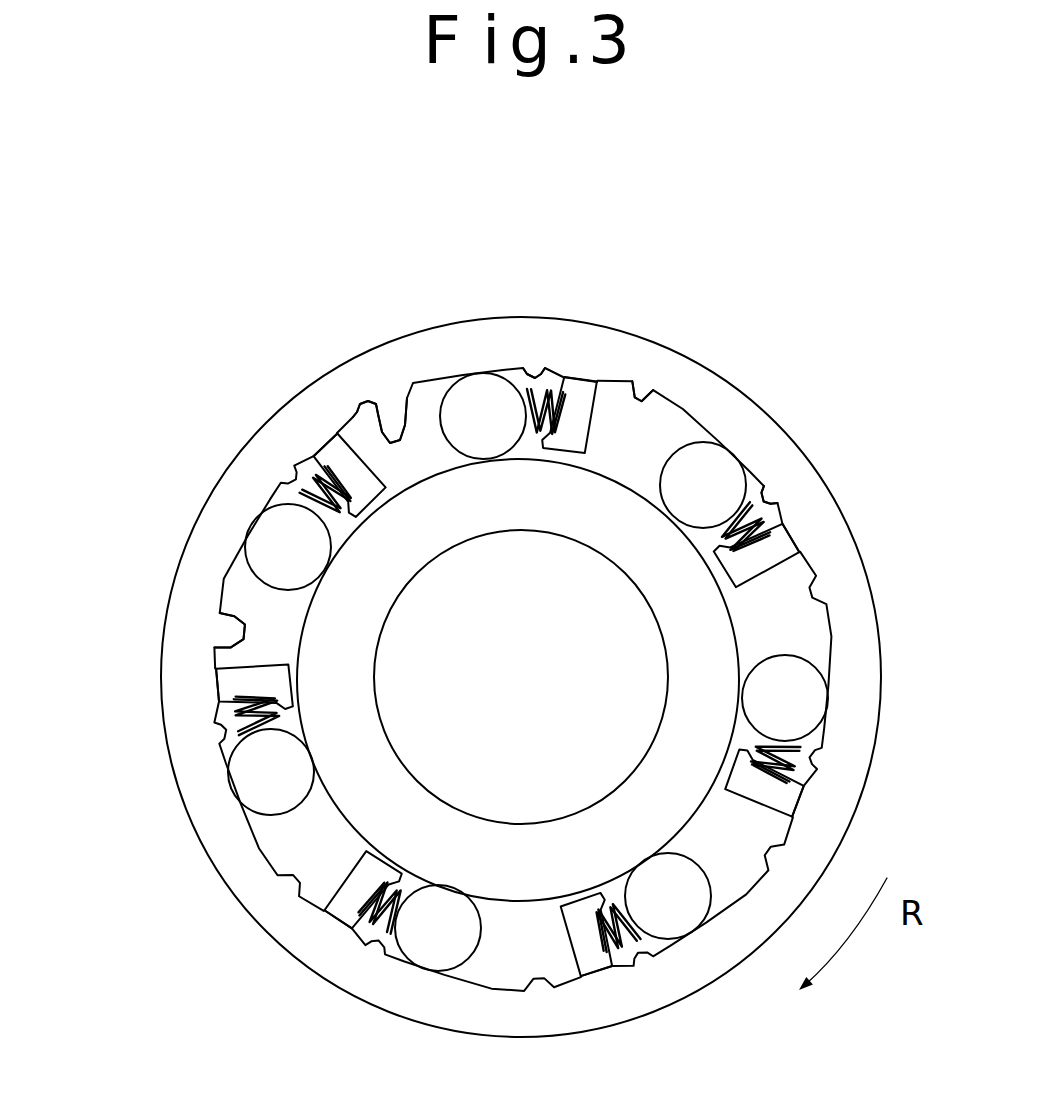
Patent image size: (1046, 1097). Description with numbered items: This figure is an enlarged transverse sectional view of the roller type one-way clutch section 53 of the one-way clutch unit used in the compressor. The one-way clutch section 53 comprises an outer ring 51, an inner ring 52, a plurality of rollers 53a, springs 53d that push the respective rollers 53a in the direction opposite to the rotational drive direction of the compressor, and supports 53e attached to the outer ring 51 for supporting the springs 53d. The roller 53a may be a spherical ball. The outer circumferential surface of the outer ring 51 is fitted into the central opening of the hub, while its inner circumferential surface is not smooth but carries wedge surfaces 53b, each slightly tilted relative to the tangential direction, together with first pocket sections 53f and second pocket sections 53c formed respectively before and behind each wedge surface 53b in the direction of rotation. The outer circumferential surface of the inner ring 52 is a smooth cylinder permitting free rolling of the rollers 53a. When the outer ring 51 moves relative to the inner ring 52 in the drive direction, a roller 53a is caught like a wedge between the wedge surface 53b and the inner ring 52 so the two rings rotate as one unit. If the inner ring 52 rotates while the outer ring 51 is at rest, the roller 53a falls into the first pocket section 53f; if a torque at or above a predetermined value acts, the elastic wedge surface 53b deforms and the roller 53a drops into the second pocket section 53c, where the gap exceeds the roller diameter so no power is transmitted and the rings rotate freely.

The outer ring 51 is at (828, 530).
The inner ring 52 is at (372, 795).
The one-way clutch section 53 is at (178, 447).
The roller 53a is at (470, 405).
The wedge surface 53b is at (357, 468).
The second pocket section 53c is at (375, 405).
The spring 53d is at (555, 415).
The support 53e is at (588, 432).
The first pocket section 53f is at (533, 372).